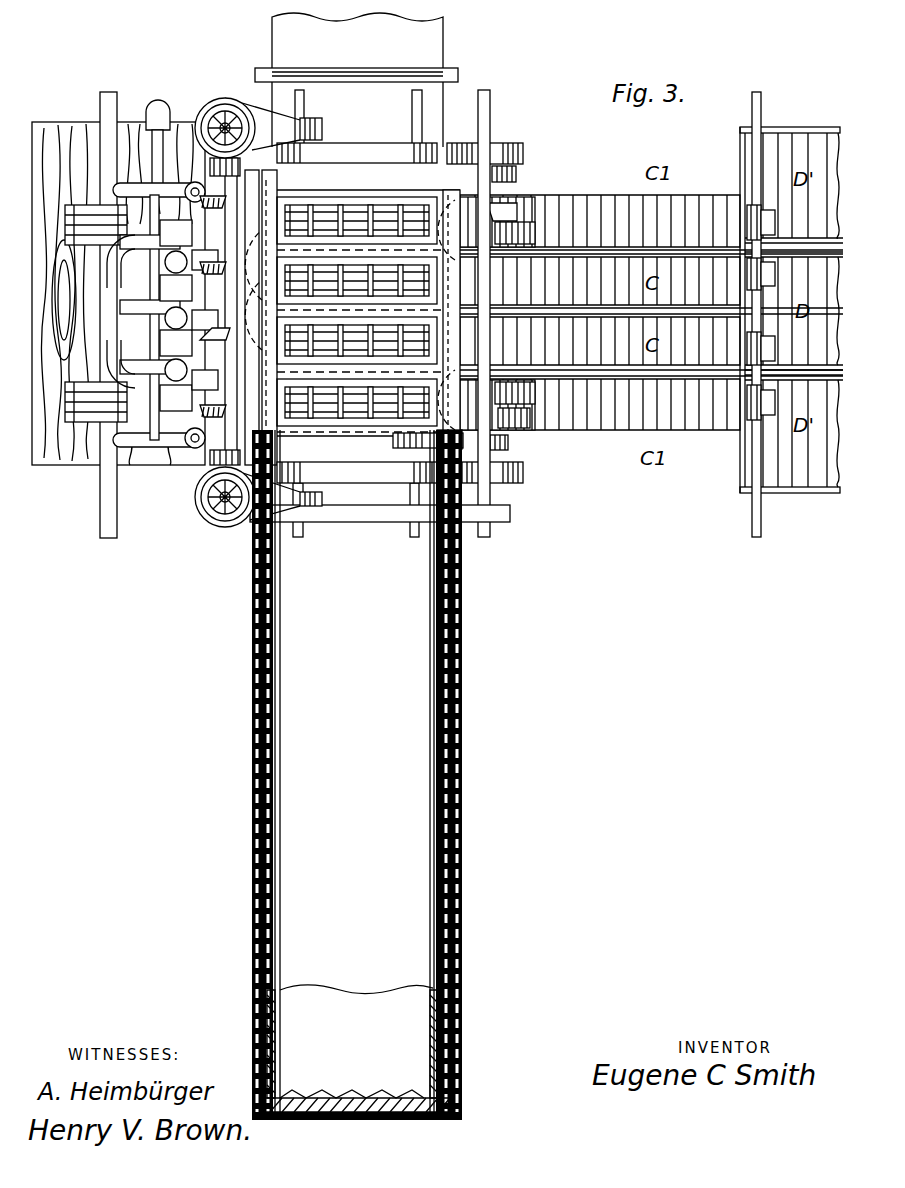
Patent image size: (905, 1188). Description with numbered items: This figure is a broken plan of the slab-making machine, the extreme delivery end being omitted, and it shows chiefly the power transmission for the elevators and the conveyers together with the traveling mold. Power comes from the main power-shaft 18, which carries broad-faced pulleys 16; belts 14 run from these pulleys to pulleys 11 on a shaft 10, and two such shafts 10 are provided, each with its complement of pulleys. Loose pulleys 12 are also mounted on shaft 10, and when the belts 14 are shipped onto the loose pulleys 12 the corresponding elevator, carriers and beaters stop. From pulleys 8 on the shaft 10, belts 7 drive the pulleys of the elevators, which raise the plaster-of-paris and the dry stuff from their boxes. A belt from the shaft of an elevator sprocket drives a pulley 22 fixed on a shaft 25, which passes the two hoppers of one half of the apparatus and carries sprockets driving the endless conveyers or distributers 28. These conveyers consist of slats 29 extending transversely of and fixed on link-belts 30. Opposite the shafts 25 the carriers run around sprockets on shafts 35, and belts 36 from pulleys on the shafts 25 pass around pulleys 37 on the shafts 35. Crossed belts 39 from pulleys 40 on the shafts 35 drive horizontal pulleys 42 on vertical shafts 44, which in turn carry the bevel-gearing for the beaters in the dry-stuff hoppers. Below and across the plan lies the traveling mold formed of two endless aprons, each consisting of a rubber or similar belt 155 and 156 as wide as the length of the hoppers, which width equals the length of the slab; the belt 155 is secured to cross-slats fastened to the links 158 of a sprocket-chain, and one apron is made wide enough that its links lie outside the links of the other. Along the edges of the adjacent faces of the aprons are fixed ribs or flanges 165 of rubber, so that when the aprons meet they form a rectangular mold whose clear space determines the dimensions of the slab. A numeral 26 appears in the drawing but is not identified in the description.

The belt 7 is at (522, 308).
The pulley 8 is at (493, 314).
The shaft 10 is at (500, 323).
The pulley 11 is at (502, 418).
The loose pulley 12 is at (531, 313).
The belt 14 is at (305, 315).
The pulley 16 is at (99, 313).
The main power-shaft 18 is at (106, 316).
The pulley 22 is at (420, 448).
The shaft 25 is at (403, 521).
The rack bar 26 is at (415, 442).
The endless conveyer 28 is at (454, 313).
The slat 29 is at (385, 307).
The link-belt 30 is at (372, 298).
The shaft 35 is at (357, 304).
The belt 36 is at (357, 237).
The pulley 37 is at (357, 303).
The crossed belt 39 is at (324, 312).
The pulley 40 is at (380, 310).
The horizontal pulley 42 is at (225, 310).
The vertical shaft 44 is at (235, 293).
The apron 155 is at (355, 825).
The apron 156 is at (357, 1048).
The link 158 is at (358, 775).
The rib 165 is at (354, 771).